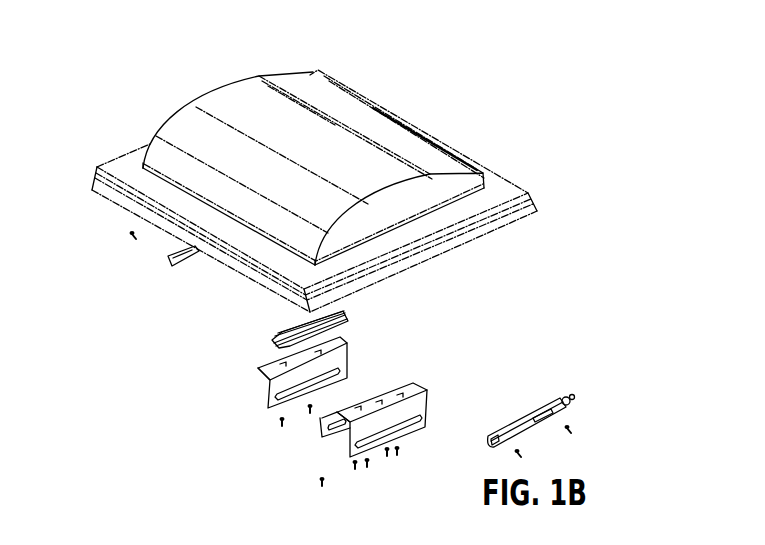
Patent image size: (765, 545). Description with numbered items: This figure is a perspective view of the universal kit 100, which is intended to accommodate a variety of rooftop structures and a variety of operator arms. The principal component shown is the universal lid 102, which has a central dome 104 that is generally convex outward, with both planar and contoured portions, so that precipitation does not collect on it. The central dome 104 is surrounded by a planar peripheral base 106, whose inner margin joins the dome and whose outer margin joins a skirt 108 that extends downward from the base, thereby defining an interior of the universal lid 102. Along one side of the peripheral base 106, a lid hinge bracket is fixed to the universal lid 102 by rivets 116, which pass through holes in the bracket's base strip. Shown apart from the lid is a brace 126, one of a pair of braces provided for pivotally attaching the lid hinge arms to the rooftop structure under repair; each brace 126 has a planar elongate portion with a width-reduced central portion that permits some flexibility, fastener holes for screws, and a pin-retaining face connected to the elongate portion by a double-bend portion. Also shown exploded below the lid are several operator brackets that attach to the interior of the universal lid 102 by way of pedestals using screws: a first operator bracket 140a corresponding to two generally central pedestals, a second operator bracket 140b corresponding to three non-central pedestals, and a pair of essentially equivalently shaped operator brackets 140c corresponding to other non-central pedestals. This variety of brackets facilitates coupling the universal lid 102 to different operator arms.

The universal kit 100 is at (582, 101).
The universal lid 102 is at (295, 46).
The central dome 104 is at (242, 108).
The planar peripheral base 106 is at (120, 164).
The skirt 108 is at (110, 193).
The rivets 116 is at (377, 107).
The brace 126 is at (573, 397).
The first operator bracket 140a is at (347, 316).
The second operator bracket 140b is at (318, 433).
The operator brackets 140c is at (348, 342).